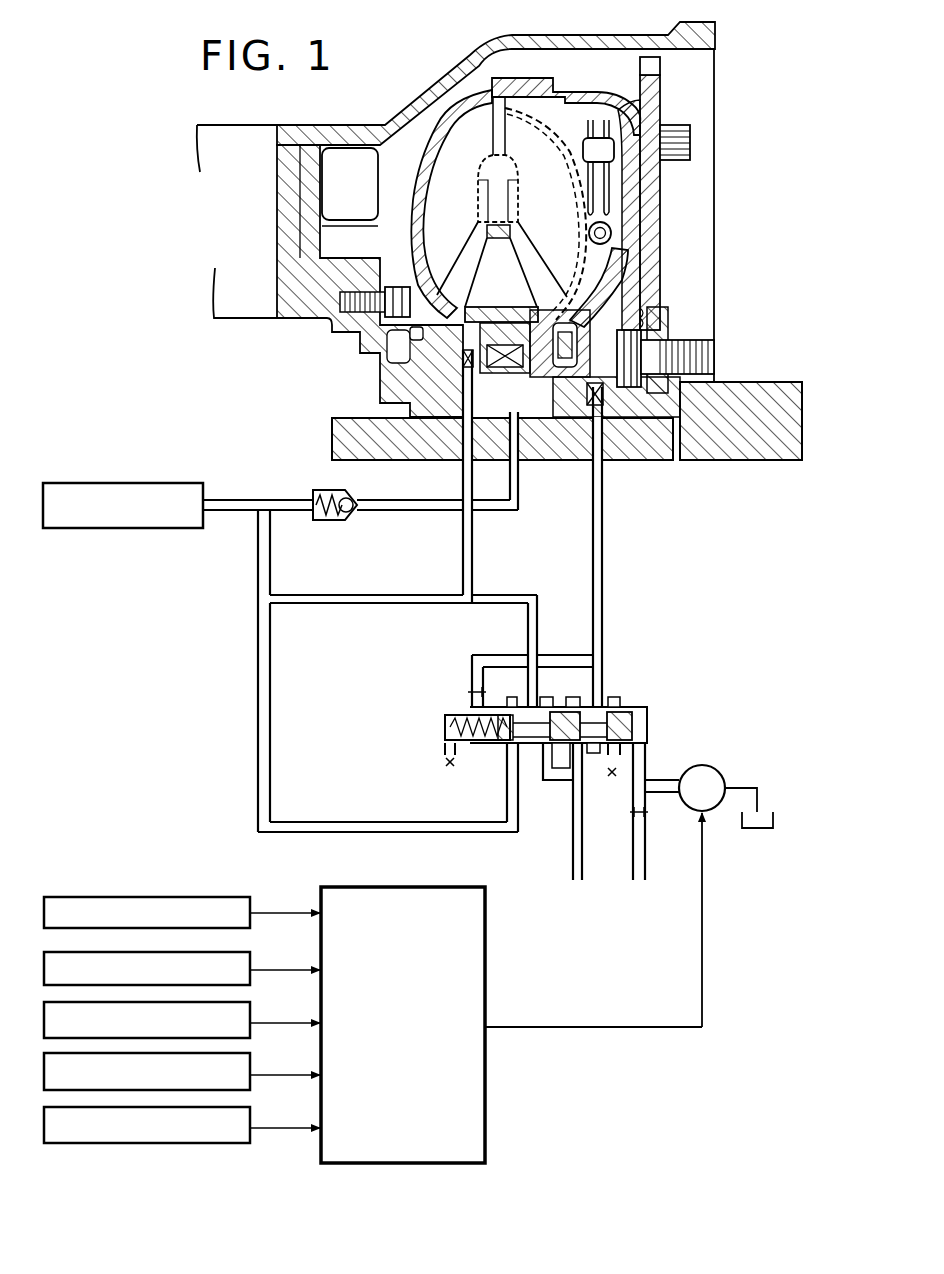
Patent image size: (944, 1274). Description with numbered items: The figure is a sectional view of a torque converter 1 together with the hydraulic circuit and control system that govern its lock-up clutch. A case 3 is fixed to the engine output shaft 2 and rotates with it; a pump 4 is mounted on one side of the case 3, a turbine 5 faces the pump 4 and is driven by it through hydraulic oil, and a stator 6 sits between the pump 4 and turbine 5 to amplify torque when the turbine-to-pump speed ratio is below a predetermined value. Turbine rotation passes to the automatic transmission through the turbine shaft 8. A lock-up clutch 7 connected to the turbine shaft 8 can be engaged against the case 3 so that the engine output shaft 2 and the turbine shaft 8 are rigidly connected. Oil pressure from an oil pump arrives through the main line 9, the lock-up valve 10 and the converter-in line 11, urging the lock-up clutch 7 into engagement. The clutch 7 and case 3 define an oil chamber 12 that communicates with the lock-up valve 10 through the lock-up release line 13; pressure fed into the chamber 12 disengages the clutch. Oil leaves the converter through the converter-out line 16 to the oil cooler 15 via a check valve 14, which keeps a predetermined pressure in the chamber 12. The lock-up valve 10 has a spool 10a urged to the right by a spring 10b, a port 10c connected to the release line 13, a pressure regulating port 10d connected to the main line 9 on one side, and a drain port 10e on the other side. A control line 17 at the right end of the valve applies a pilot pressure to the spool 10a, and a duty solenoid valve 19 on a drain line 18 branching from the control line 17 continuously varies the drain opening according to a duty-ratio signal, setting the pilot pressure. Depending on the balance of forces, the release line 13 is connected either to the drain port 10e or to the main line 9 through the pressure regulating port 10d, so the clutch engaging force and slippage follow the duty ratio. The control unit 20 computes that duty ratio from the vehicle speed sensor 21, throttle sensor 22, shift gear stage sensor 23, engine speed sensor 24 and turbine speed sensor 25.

The torque converter 1 is at (578, 72).
The engine output shaft 2 is at (758, 382).
The case 3 is at (500, 96).
The pump 4 is at (452, 162).
The turbine 5 is at (528, 153).
The stator 6 is at (490, 262).
The lock-up clutch 7 is at (618, 216).
The turbine shaft 8 is at (413, 460).
The main line 9 is at (573, 848).
The lock-up valve 10 is at (650, 722).
The spool 10a is at (626, 714).
The spring 10b is at (450, 716).
The port 10c is at (600, 690).
The pressure regulating port 10d is at (577, 750).
The drain port 10e is at (617, 753).
The converter-in line 11 is at (473, 548).
The oil chamber 12 is at (618, 272).
The lock-up release line 13 is at (603, 551).
The check valve 14 is at (335, 522).
The oil cooler 15 is at (128, 483).
The converter-out line 16 is at (520, 496).
The control line 17 is at (646, 850).
The drain line 18 is at (662, 780).
The duty solenoid valve 19 is at (722, 770).
The control unit 20 is at (400, 887).
The vehicle speed sensor 21 is at (245, 896).
The throttle sensor 22 is at (248, 956).
The shift gear stage sensor 23 is at (247, 1010).
The engine speed sensor 24 is at (247, 1062).
The turbine speed sensor 25 is at (247, 1115).